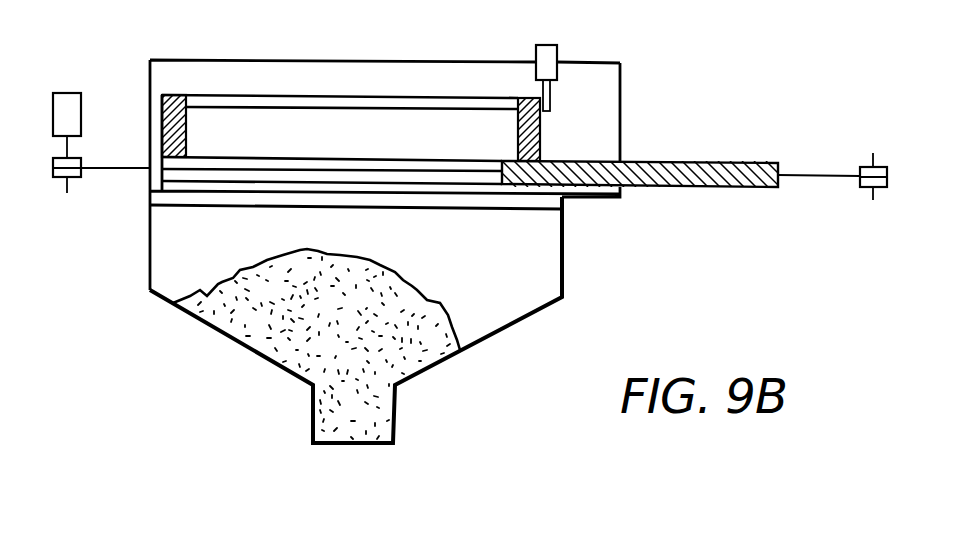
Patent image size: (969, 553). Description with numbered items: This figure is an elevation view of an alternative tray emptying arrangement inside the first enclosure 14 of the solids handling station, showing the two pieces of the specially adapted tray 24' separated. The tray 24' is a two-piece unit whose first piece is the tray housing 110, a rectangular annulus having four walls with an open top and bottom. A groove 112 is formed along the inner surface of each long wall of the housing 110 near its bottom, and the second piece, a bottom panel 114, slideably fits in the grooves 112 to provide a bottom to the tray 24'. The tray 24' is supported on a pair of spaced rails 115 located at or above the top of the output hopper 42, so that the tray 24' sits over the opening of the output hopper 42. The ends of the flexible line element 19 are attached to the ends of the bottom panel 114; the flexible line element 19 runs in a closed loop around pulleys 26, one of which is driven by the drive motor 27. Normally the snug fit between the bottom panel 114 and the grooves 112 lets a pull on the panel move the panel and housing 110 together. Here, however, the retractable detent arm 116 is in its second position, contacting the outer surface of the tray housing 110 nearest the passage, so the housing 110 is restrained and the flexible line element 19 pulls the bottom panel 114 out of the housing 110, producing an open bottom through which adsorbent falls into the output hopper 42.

The first enclosure 14 is at (413, 62).
The tray housing 110 is at (180, 94).
The tray 24' is at (566, 108).
The groove 112 is at (322, 159).
The retractable detent arm 116 is at (551, 98).
The bottom panel 114 is at (742, 187).
The flexible line element 19 is at (830, 177).
The drive motor 27 is at (67, 90).
The pulley 26 is at (76, 181).
The rail 115 is at (187, 198).
The output hopper 42 is at (170, 288).